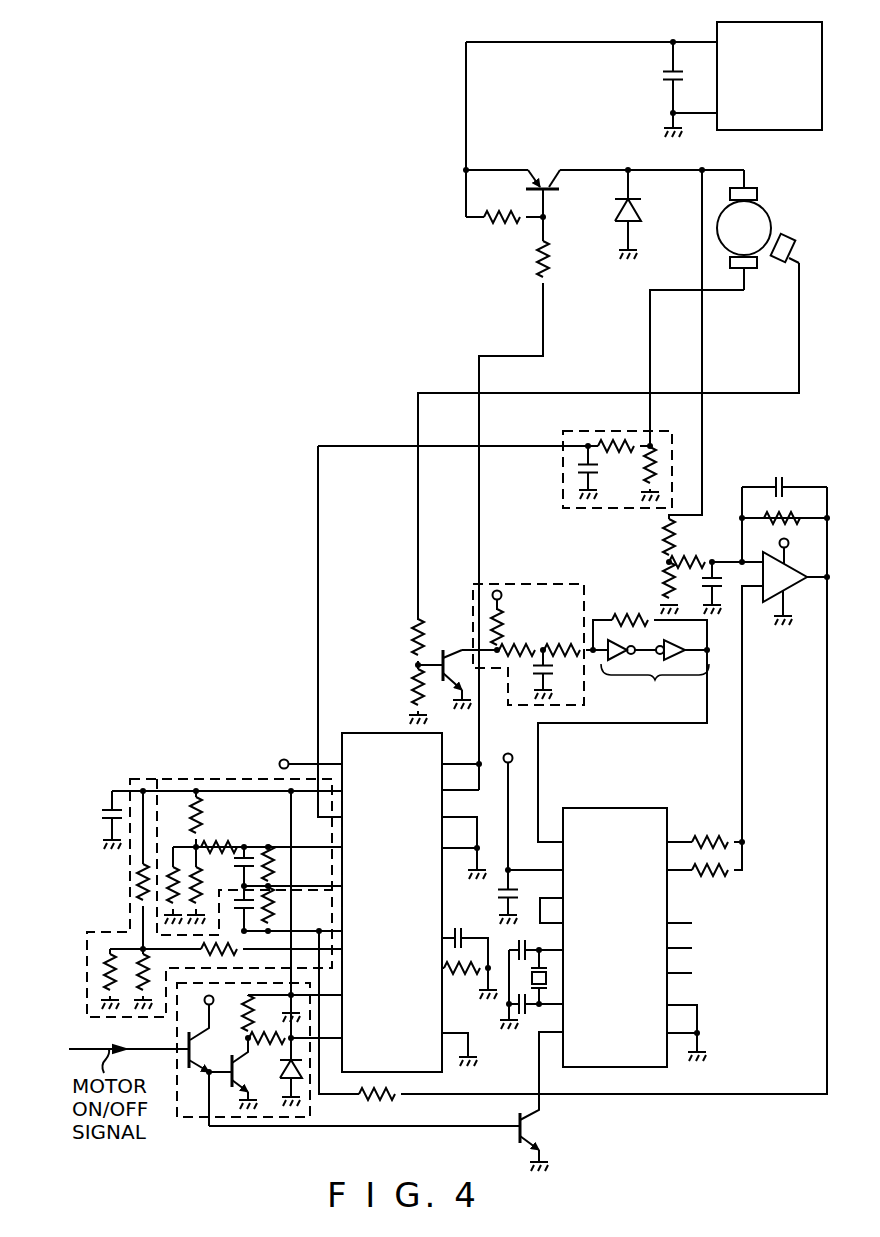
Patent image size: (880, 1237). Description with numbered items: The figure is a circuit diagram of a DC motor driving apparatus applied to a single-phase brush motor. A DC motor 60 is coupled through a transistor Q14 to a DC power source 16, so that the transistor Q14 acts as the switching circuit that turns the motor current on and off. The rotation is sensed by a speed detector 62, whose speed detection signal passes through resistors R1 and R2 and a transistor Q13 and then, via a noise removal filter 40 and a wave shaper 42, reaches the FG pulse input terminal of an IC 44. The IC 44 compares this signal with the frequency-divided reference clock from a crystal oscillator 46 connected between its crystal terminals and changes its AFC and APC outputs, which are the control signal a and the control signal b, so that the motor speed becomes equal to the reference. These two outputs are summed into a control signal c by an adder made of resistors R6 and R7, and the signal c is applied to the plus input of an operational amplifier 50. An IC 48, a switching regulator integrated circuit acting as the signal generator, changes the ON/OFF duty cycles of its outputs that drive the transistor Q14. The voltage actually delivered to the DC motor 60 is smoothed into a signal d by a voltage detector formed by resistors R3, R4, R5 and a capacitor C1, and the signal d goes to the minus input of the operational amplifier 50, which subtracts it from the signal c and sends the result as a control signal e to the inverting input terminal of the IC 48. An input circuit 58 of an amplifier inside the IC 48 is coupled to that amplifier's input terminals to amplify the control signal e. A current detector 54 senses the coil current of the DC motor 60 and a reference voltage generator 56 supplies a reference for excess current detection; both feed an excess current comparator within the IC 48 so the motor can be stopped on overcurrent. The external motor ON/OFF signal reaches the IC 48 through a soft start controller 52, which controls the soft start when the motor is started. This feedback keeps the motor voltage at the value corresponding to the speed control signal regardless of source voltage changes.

The DC power source 16 is at (717, 32).
The transistor Q14 is at (546, 182).
The DC motor 60 is at (764, 208).
The speed detector 62 is at (770, 270).
The current detector 54 is at (565, 444).
The noise removal filter 40 is at (518, 584).
The transistor Q13 is at (448, 650).
The resistor R1 is at (414, 640).
The resistor R2 is at (414, 688).
The resistor R3 is at (665, 540).
The resistor R4 is at (665, 583).
The resistor R5 is at (703, 562).
The capacitor C1 is at (706, 583).
The operational amplifier 50 is at (789, 563).
The wave shaper 42 is at (650, 662).
The IC 48 is at (360, 733).
The IC 44 is at (606, 808).
The crystal oscillator 46 is at (544, 1021).
The soft start controller 52 is at (245, 1117).
The reference voltage generator 56 is at (205, 779).
The input circuit 58 is at (111, 932).
The resistor R6 is at (705, 838).
The resistor R7 is at (723, 876).
The control signal a is at (678, 835).
The control signal b is at (683, 875).
The control signal c is at (742, 758).
The signal d is at (736, 561).
The control signal e is at (827, 717).